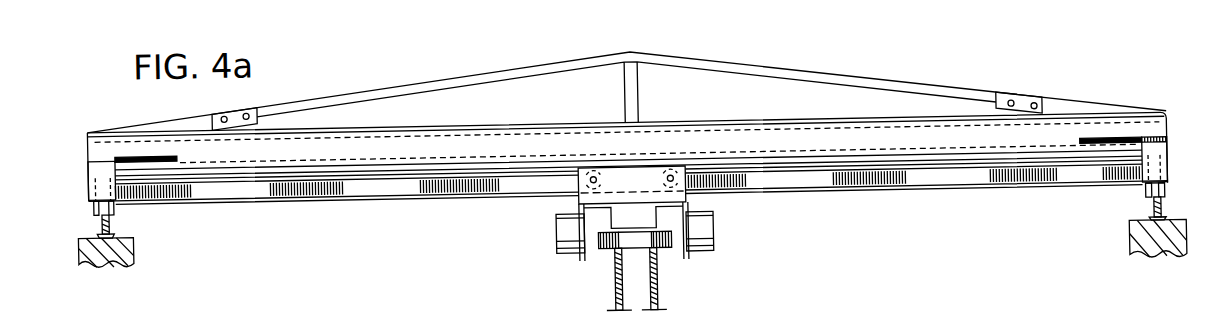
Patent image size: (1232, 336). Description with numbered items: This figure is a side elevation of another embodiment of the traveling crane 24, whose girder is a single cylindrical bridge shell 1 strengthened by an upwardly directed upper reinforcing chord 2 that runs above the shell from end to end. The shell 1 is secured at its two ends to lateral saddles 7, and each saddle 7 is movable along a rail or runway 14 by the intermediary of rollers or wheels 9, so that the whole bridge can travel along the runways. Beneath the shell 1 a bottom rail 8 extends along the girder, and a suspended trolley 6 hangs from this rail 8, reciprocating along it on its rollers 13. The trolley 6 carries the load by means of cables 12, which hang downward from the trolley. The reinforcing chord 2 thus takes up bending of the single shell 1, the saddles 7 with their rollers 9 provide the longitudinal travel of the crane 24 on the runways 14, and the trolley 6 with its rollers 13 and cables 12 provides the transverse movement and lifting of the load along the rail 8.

The bridge shell 1 is at (710, 140).
The upper reinforcing chord 2 is at (490, 72).
The crane 24 is at (410, 64).
The trolley 6 is at (699, 202).
The lateral saddle 7 is at (88, 164).
The rail 8 is at (866, 180).
The roller 9 is at (93, 198).
The cables 12 is at (620, 285).
The rollers 13 is at (665, 170).
The runway 14 is at (110, 219).